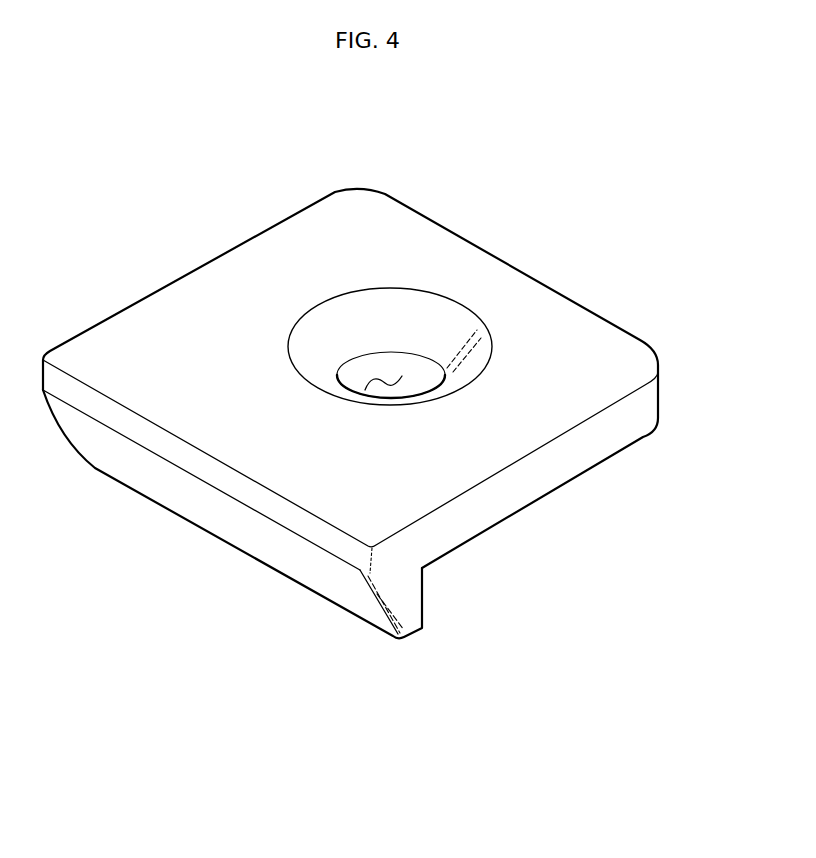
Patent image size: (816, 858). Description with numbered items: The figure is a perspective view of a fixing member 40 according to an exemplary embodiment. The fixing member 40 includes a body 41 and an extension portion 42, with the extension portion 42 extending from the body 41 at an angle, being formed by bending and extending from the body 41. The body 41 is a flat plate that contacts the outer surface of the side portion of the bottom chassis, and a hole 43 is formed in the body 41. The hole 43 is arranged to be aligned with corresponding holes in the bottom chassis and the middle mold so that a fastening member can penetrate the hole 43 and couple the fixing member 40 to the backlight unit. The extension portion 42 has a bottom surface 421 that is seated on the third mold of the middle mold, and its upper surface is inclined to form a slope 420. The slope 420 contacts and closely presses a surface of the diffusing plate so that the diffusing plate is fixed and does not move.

The fixing member 40 is at (549, 253).
The body 41 is at (605, 347).
The extension portion 42 is at (400, 615).
The hole 43 is at (390, 378).
The slope 420 is at (238, 531).
The bottom surface 421 is at (423, 592).